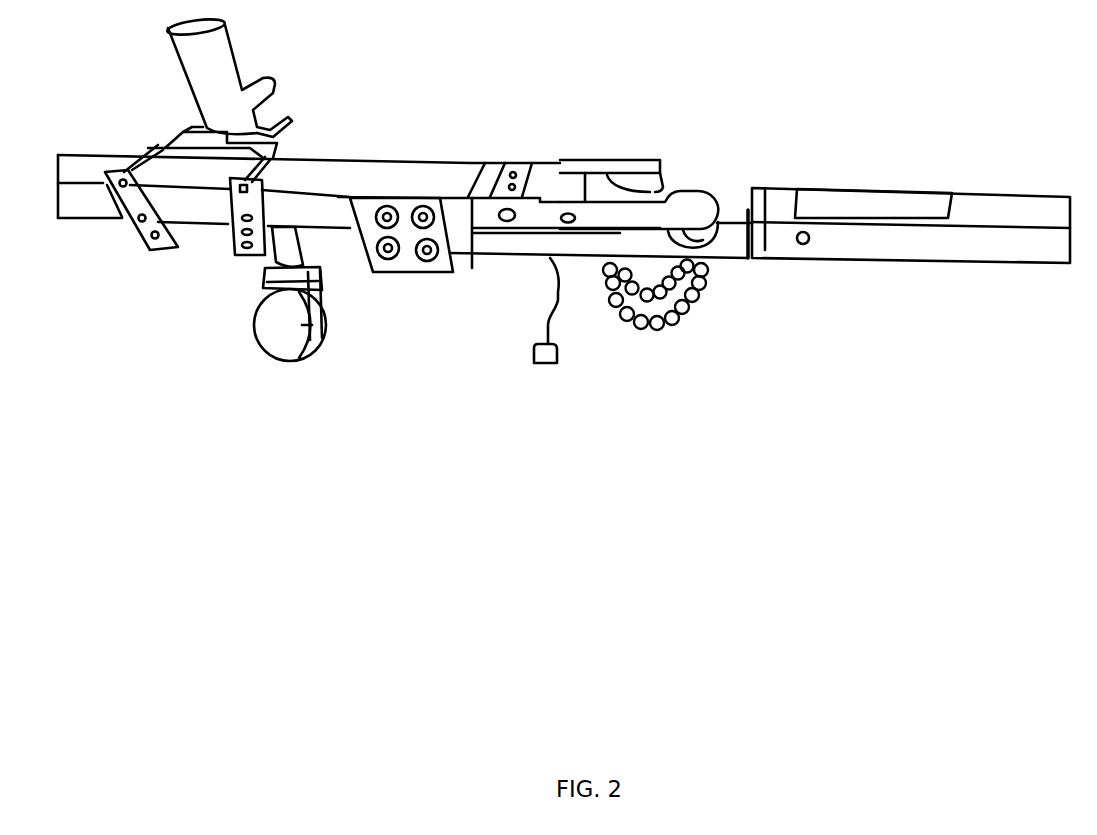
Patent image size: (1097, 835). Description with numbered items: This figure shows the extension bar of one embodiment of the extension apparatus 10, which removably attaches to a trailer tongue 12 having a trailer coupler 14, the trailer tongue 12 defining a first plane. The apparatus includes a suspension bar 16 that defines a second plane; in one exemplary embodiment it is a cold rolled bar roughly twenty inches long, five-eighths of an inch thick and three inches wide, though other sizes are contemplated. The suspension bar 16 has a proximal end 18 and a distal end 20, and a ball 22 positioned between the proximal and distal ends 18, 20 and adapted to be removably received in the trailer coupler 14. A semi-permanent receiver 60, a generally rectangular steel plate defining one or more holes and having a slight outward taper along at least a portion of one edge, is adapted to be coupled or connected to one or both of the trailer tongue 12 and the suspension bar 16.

The extension apparatus 10 is at (621, 152).
The trailer tongue 12 is at (292, 180).
The trailer coupler 14 is at (518, 165).
The suspension bar 16 is at (572, 250).
The proximal end 18 is at (472, 268).
The distal end 20 is at (735, 245).
The ball 22 is at (705, 262).
The semi-permanent receiver 60 is at (403, 258).